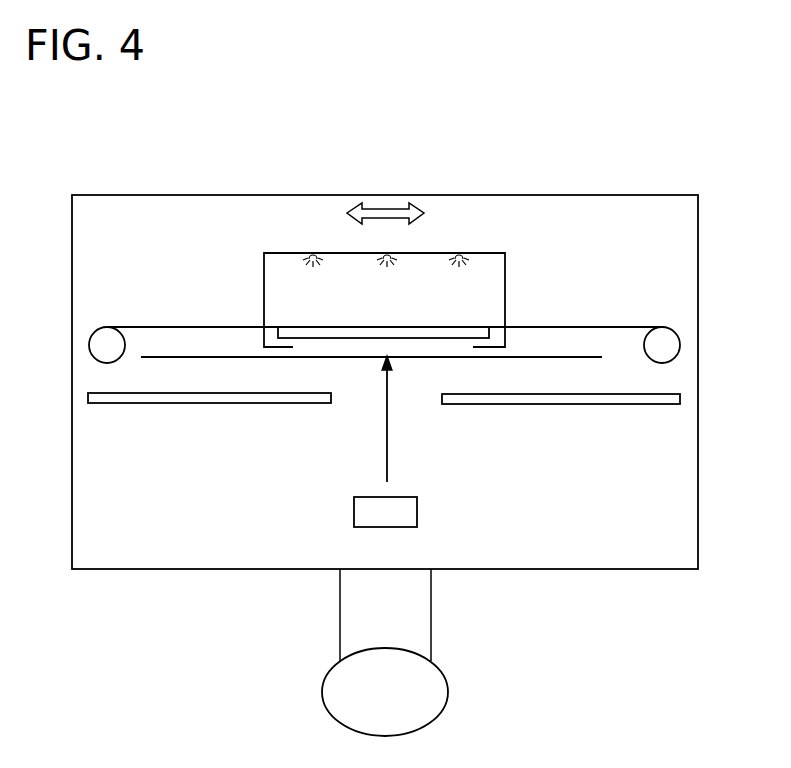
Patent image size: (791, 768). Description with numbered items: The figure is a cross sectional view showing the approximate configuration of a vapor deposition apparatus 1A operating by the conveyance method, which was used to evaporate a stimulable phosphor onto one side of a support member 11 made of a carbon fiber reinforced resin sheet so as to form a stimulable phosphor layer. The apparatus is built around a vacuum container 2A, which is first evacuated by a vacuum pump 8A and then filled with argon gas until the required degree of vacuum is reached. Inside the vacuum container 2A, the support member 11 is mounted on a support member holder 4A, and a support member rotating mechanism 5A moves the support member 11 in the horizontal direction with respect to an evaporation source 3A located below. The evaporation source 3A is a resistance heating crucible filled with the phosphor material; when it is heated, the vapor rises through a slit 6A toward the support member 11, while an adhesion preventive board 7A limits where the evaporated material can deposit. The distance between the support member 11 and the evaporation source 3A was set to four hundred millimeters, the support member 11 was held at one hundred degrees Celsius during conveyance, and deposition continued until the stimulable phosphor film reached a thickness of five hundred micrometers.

The vapor deposition apparatus 1A is at (402, 120).
The vacuum container 2A is at (698, 324).
The evaporation source 3A is at (417, 512).
The support member holder 4A is at (490, 253).
The support member rotating mechanism 5A is at (582, 327).
The slit 6A is at (387, 432).
The adhesion preventive board 7A is at (540, 404).
The vacuum pump 8A is at (435, 693).
The support member 11 is at (457, 328).